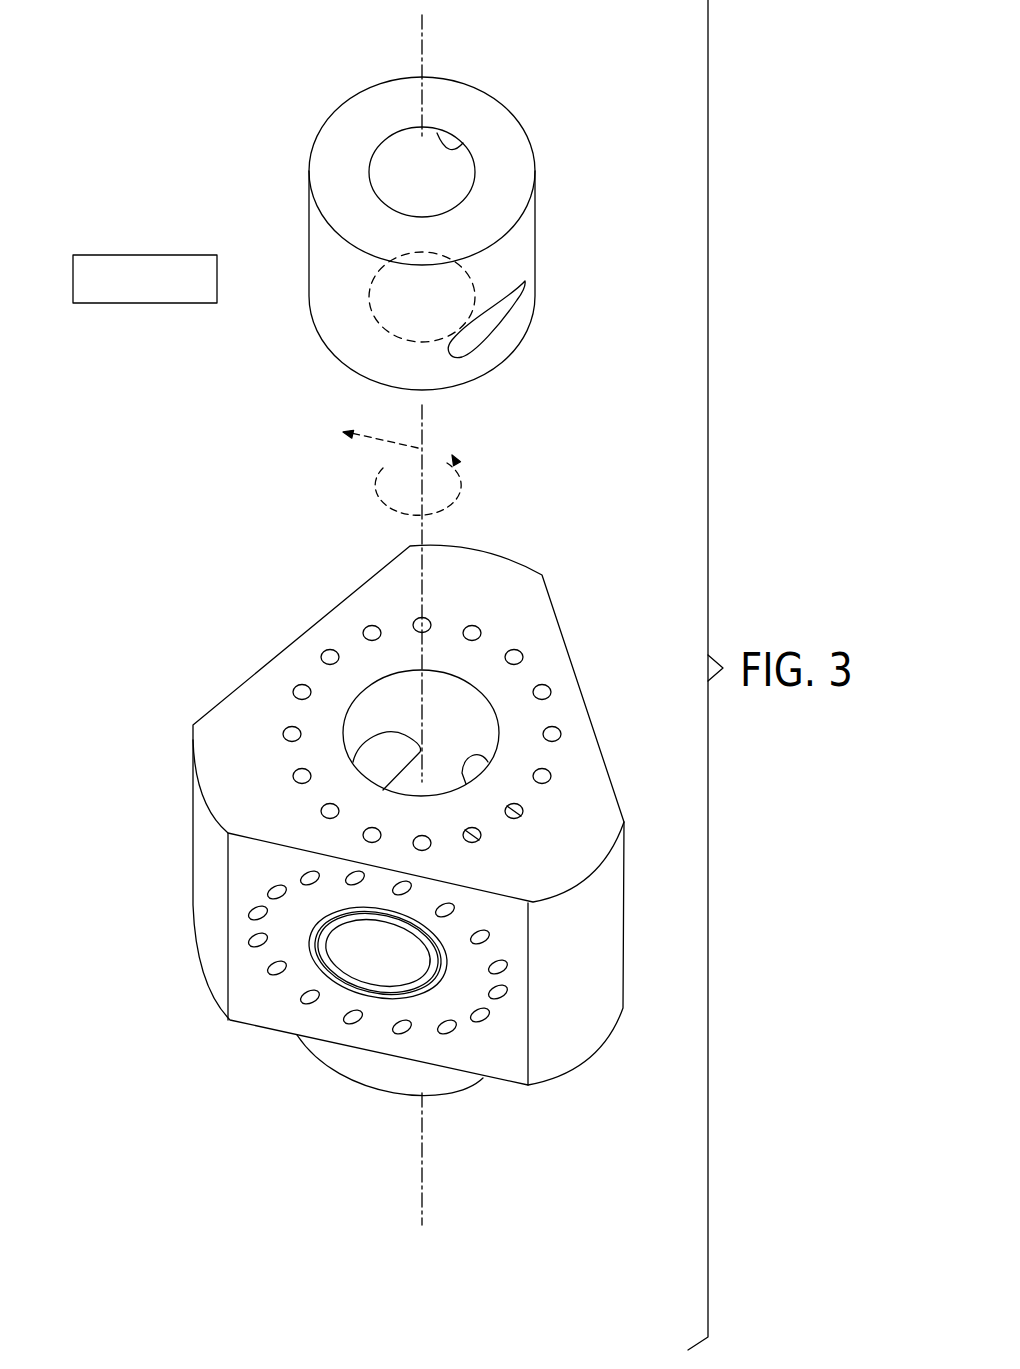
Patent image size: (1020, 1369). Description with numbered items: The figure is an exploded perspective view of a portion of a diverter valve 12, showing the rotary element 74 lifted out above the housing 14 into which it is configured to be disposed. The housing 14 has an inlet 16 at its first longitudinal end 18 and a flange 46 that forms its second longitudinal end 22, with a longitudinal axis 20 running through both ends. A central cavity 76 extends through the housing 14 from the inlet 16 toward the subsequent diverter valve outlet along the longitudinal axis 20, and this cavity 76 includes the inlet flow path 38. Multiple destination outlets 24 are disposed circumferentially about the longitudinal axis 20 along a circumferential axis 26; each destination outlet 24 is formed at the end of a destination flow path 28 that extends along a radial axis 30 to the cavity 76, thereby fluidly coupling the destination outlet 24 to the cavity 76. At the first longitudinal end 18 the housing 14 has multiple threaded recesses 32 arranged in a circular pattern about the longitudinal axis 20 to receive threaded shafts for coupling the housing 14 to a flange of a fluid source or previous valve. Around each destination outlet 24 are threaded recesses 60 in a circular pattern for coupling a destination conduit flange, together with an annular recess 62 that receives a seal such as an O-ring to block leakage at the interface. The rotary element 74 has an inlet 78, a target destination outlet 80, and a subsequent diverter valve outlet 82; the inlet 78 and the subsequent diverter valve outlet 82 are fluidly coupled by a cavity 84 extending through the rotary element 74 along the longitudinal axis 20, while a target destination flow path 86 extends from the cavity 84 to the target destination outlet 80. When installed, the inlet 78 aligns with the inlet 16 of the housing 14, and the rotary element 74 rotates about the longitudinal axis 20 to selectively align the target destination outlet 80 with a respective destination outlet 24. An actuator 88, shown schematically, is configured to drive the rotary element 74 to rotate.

The diverter valve 12 is at (248, 95).
The housing 14 is at (623, 914).
The inlet 16 is at (460, 708).
The first longitudinal end 18 is at (562, 770).
The longitudinal axis 20 is at (422, 1155).
The second longitudinal end 22 is at (523, 1103).
The destination outlet 24 is at (350, 950).
The circumferential axis 26 is at (458, 501).
The destination flow path 28 is at (365, 967).
The radial axis 30 is at (387, 444).
The threaded recess 32 is at (521, 808).
The inlet flow path 38 is at (383, 693).
The flange 46 is at (348, 1062).
The threaded recess 60 is at (484, 1016).
The annular recess 62 is at (337, 960).
The rotary element 74 is at (310, 233).
The central cavity 76 is at (372, 724).
The inlet 78 is at (450, 149).
The target destination outlet 80 is at (520, 282).
The subsequent diverter valve outlet 82 is at (397, 337).
The cavity 84 is at (452, 172).
The target destination flow path 86 is at (495, 330).
The actuator 88 is at (145, 253).